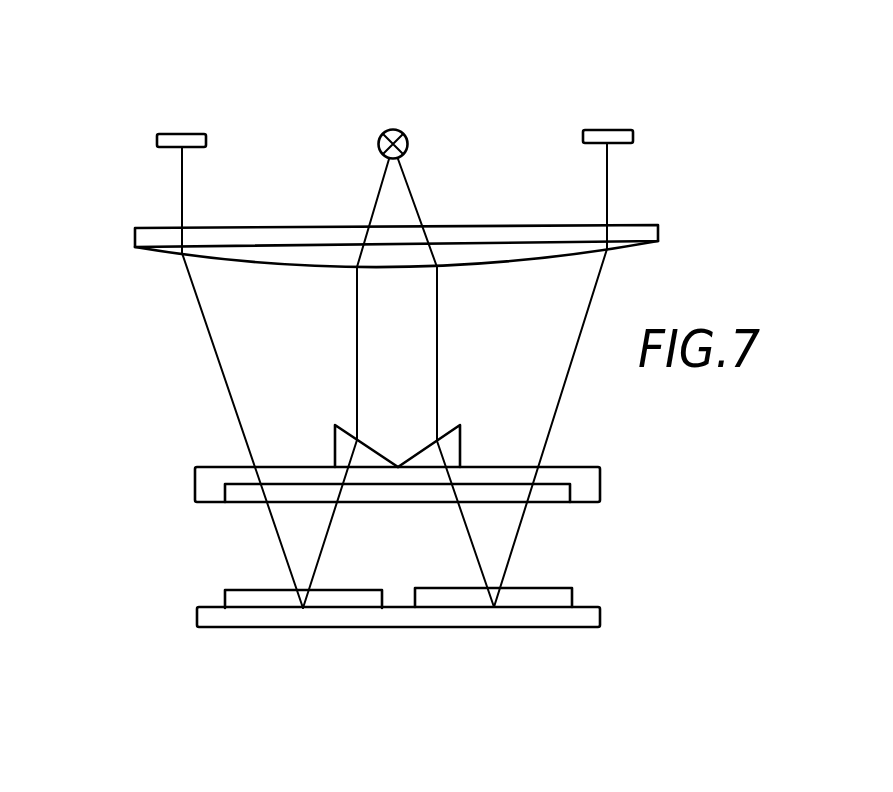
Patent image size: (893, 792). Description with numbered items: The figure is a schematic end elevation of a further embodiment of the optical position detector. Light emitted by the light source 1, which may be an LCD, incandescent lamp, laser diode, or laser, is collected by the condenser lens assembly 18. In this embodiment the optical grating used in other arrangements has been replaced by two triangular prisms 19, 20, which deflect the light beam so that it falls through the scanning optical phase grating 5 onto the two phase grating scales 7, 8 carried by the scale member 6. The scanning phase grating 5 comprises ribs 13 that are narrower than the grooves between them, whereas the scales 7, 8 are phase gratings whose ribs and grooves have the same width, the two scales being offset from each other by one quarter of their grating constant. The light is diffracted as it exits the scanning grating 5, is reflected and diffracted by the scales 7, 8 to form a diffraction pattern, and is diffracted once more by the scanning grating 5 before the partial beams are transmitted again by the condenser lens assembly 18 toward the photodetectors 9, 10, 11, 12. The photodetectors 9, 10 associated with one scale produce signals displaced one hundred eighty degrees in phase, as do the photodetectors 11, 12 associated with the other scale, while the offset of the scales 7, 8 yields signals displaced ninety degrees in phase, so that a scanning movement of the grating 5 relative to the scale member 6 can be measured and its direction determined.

The light source 1 is at (395, 129).
The scanning optical phase grating 5 is at (582, 468).
The scale member 6 is at (578, 615).
The phase grating scale 7 is at (258, 595).
The phase grating scale 8 is at (540, 588).
The photodetector 9 is at (168, 99).
The photodetector 10 is at (175, 133).
The photodetector 11 is at (630, 95).
The photodetector 12 is at (602, 129).
The ribs 13 is at (255, 493).
The condenser lens assembly 18 is at (635, 230).
The triangular prism 19 is at (345, 443).
The triangular prism 20 is at (453, 445).